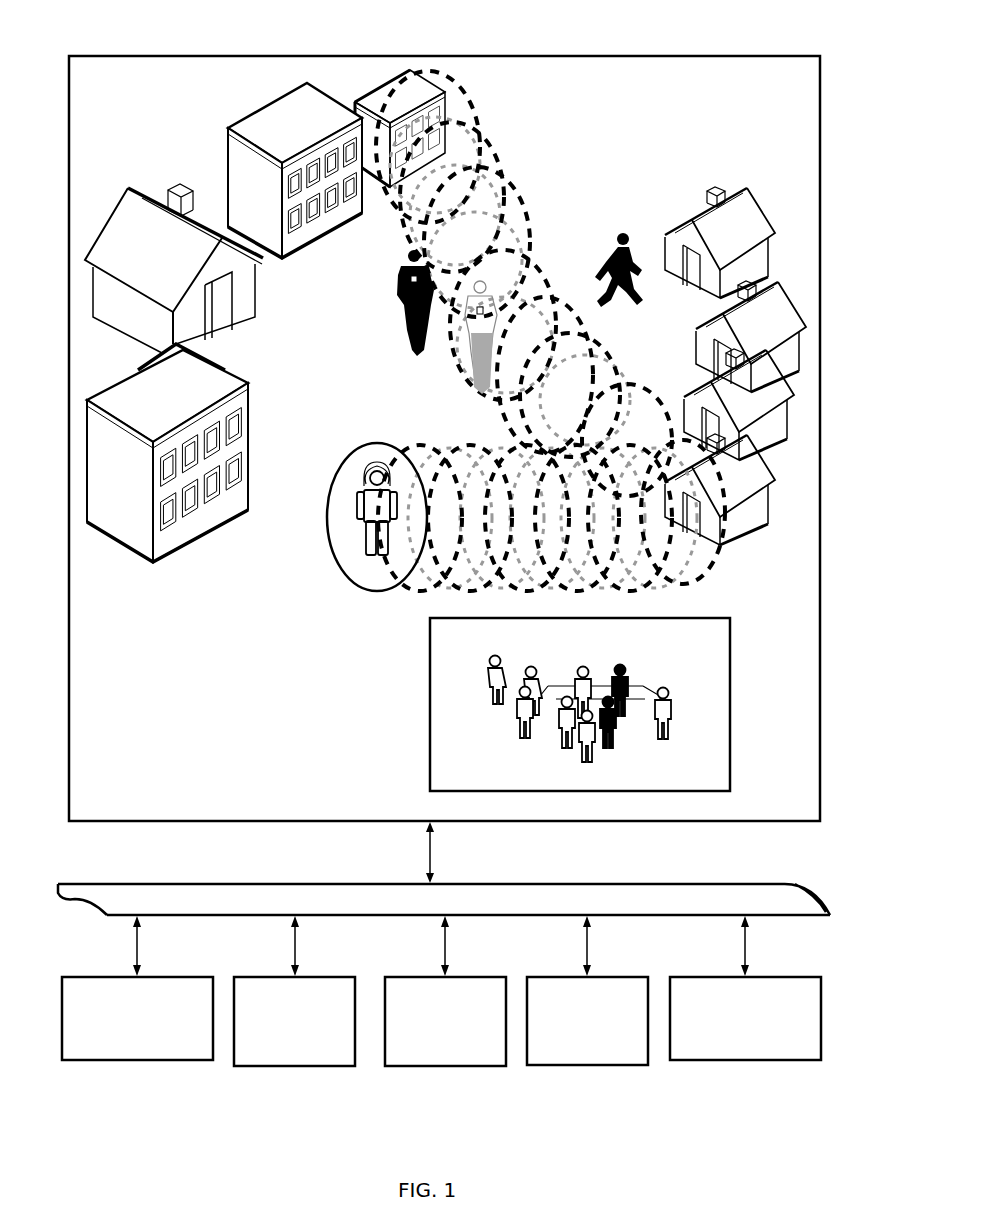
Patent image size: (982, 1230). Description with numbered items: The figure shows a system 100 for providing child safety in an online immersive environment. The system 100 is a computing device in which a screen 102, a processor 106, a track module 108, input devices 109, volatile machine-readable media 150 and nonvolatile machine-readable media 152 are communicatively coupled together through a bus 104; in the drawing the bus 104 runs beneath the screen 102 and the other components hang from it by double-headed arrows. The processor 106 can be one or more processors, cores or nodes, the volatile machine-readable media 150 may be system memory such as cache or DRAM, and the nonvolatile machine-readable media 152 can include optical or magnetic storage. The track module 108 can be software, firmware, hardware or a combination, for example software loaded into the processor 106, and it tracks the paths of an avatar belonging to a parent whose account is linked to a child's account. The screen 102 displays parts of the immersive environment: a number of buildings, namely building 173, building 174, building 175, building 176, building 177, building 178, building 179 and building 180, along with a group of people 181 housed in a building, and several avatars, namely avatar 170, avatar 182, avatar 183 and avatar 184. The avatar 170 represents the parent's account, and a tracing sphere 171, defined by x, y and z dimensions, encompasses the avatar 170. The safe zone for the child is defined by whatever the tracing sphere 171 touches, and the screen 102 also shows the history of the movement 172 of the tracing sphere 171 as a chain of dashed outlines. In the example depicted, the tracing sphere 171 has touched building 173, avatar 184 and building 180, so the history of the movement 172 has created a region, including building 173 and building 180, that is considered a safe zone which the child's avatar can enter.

The system 100 is at (142, 20).
The screen 102 is at (639, 56).
The bus 104 is at (705, 883).
The processor 106 is at (282, 1068).
The track module 108 is at (474, 1068).
The input devices 109 is at (596, 1067).
The volatile machine-readable media 150 is at (139, 1063).
The nonvolatile machine-readable media 152 is at (745, 1063).
The avatar 170 is at (373, 523).
The tracing sphere 171 is at (381, 593).
The history of the movement 172 is at (530, 213).
The building 173 is at (374, 78).
The building 174 is at (253, 112).
The building 175 is at (136, 188).
The building 176 is at (252, 397).
The building 177 is at (745, 189).
The building 178 is at (787, 287).
The building 179 is at (697, 382).
The building 180 is at (760, 543).
The group of people 181 is at (670, 688).
The avatar 182 is at (627, 234).
The avatar 183 is at (398, 329).
The avatar 184 is at (462, 354).